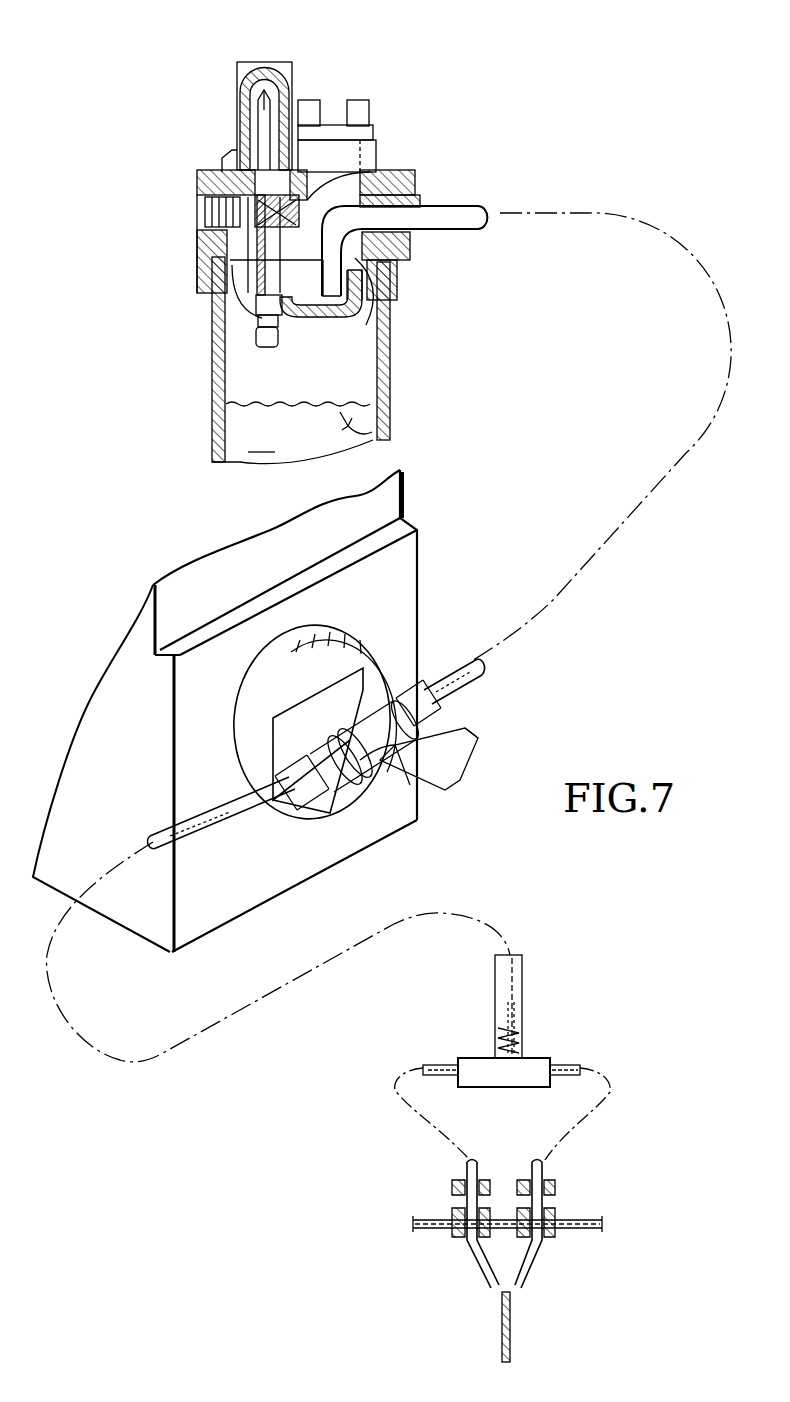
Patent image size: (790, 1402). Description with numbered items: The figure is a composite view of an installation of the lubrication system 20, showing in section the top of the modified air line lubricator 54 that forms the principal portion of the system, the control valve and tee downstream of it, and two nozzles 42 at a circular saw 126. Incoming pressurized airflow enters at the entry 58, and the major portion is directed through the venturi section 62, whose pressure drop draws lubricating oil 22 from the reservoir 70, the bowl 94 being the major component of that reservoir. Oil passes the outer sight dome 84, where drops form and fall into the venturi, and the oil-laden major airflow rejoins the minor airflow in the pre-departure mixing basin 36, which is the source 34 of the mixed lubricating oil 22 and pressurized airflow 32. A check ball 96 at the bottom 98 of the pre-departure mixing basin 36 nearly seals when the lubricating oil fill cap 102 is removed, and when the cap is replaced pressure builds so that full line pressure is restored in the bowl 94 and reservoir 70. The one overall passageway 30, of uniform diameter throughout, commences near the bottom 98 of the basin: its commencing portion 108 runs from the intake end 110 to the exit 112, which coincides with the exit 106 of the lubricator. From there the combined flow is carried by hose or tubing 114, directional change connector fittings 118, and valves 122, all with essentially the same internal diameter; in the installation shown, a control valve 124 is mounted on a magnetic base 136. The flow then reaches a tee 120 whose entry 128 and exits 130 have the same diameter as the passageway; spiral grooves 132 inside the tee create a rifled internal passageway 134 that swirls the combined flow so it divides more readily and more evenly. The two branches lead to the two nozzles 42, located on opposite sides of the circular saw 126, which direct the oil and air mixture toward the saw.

The lubrication system 20 is at (268, 56).
The lubricating oil 22 is at (498, 226).
The overall passageway 30 is at (458, 230).
The pressurized airflow 32 is at (502, 228).
The source 34 is at (318, 296).
The pre-departure mixing basin 36 is at (318, 318).
The nozzles 42 is at (422, 1062).
The modified air line lubricator 54 is at (376, 142).
The entry 58 is at (198, 196).
The venturi section 62 is at (222, 156).
The reservoir 70 is at (388, 432).
The outer sight dome 84 is at (238, 96).
The bowl 94 is at (212, 418).
The check ball 96 is at (262, 318).
The bottom 98 is at (305, 312).
The lubricating oil fill cap 102 is at (346, 102).
The exit 106 is at (415, 198).
The commencing portion 108 is at (382, 290).
The intake end 110 is at (350, 300).
The exit 112 is at (412, 244).
The hose or tubing 114 is at (178, 842).
The directional change connector fittings 118 is at (532, 970).
The tee 120 is at (480, 1060).
The valves 122 is at (420, 768).
The control valve 124 is at (372, 690).
The circular saw 126 is at (502, 1318).
The entry 128 is at (498, 966).
The exits 130 is at (537, 1060).
The spiral grooves 132 is at (521, 1020).
The rifled internal passageway 134 is at (495, 1032).
The magnetic base 136 is at (258, 686).